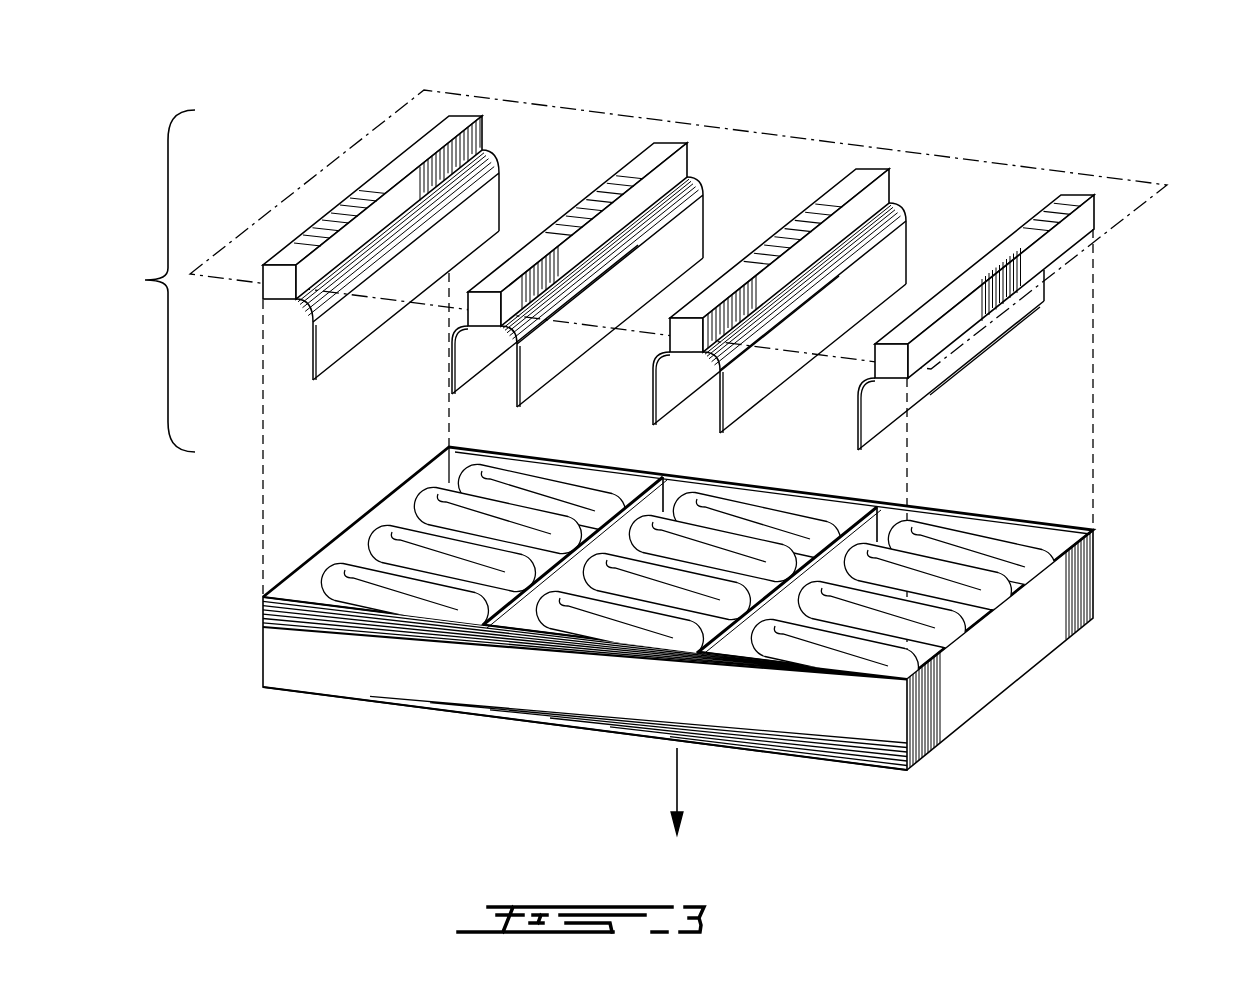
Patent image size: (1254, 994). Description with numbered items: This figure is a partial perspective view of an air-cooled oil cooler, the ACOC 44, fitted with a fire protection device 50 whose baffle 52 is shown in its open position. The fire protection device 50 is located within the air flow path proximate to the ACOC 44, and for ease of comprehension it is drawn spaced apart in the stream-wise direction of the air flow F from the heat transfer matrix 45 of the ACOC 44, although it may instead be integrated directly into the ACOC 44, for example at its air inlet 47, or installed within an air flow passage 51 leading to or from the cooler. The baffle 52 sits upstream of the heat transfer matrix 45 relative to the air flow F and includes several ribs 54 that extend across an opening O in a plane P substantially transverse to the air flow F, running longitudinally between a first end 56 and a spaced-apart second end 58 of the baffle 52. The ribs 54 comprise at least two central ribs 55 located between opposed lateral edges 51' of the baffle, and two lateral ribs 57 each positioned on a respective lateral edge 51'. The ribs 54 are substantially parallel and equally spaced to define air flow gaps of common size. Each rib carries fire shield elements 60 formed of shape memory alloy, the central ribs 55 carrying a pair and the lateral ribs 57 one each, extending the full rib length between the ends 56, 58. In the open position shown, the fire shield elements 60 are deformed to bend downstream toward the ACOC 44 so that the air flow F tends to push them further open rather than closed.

The ACOC 44 is at (730, 611).
The heat transfer matrix 45 is at (940, 602).
The air inlet 47 is at (1060, 572).
The fire protection device 50 is at (145, 280).
The air flow passage 51 is at (630, 453).
The lateral edge 51' is at (737, 283).
The baffle 52 is at (395, 138).
The rib 54 is at (440, 135).
The central rib 55 is at (645, 163).
The first end 56 is at (687, 352).
The lateral rib 57 is at (440, 135).
The second end 58 is at (873, 167).
The fire shield element 60 is at (440, 377).
The opening O is at (940, 248).
The plane P is at (1150, 172).
The air flow direction F is at (680, 783).